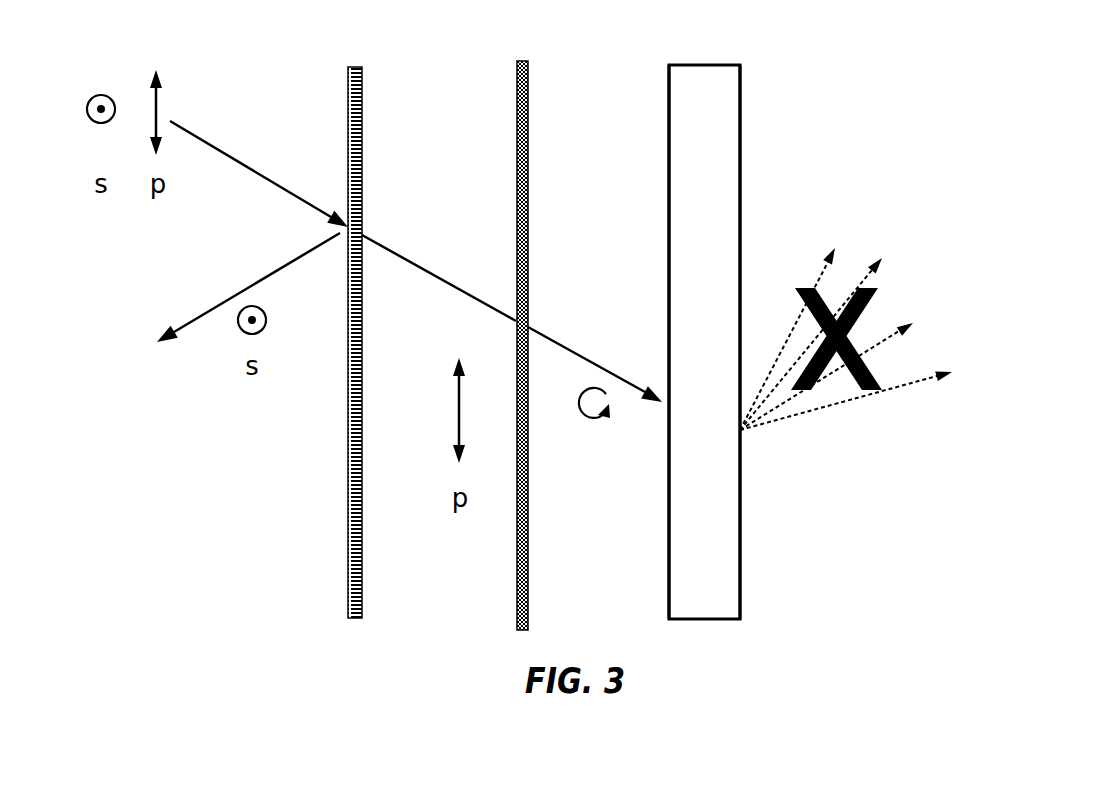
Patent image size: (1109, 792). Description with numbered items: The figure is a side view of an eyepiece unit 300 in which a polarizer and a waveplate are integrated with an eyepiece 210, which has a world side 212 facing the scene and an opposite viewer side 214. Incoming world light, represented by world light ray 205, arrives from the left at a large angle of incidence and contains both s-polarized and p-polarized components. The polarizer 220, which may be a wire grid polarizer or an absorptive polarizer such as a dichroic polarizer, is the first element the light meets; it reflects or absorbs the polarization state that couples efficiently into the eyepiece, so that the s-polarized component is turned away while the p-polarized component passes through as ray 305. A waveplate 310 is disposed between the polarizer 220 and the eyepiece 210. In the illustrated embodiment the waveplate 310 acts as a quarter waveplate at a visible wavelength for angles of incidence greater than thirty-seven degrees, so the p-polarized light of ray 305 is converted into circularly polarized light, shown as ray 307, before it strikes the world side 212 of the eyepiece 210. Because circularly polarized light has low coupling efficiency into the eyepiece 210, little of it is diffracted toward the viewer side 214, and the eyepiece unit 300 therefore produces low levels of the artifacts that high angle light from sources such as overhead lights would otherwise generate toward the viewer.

The world light ray 205 is at (225, 148).
The polarizer 220 is at (348, 556).
The ray of p-polarized light 305 is at (385, 247).
The waveplate 310 is at (517, 125).
The ray of circularly polarized light 307 is at (553, 338).
The eyepiece 210 is at (740, 555).
The world side 212 is at (669, 553).
The viewer side 214 is at (740, 485).
The eyepiece unit 300 is at (840, 92).